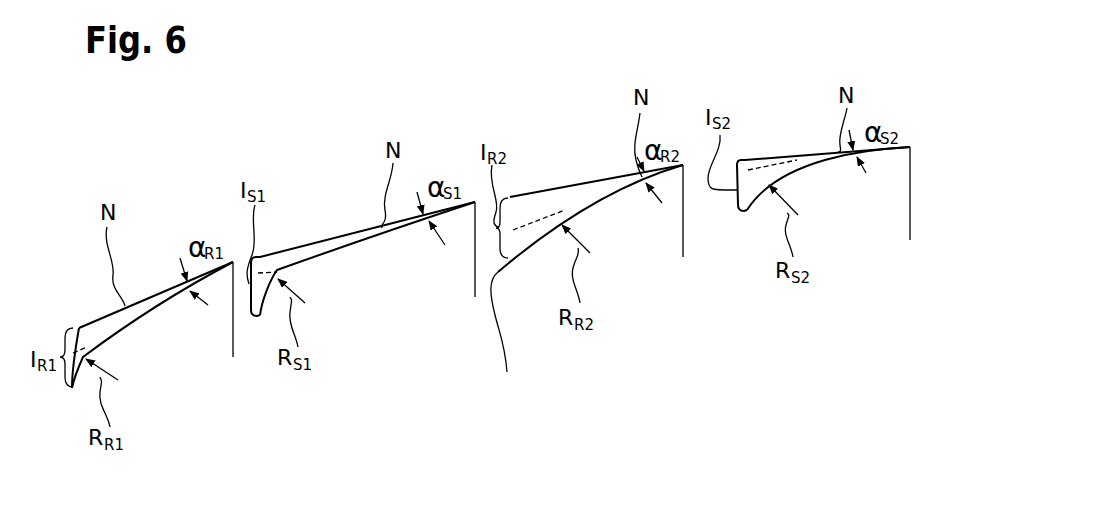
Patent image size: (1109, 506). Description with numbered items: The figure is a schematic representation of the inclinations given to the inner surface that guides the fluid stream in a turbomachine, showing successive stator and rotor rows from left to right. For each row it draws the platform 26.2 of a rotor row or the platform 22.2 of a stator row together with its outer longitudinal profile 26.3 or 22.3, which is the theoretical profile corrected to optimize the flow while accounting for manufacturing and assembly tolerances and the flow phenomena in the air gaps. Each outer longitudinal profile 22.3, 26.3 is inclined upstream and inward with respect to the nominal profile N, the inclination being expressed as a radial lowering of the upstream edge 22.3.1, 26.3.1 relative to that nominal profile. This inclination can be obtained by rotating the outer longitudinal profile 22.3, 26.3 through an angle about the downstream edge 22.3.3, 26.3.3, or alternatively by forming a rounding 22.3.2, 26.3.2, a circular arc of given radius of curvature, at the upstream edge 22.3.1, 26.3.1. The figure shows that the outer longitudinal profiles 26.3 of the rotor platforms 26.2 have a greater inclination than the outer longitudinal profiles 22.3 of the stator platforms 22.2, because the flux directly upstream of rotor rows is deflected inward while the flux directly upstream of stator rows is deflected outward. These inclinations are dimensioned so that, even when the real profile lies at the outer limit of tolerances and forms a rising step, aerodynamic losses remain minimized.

The platform of rotor row 26.2 is at (188, 406).
The outer longitudinal profile of rotor platform 26.3 is at (153, 310).
The upstream edge of rotor platform profile 26.3.1 is at (72, 390).
The rounding of rotor platform profile 26.3.2 is at (80, 328).
The downstream edge of rotor platform profile 26.3.3 is at (234, 262).
The platform of stator row 22.2 is at (398, 333).
The outer longitudinal profile of stator platform 22.3 is at (358, 240).
The upstream edge of stator platform profile 22.3.1 is at (250, 317).
The rounding of stator platform profile 22.3.2 is at (268, 257).
The downstream edge of stator platform profile 22.3.3 is at (475, 202).